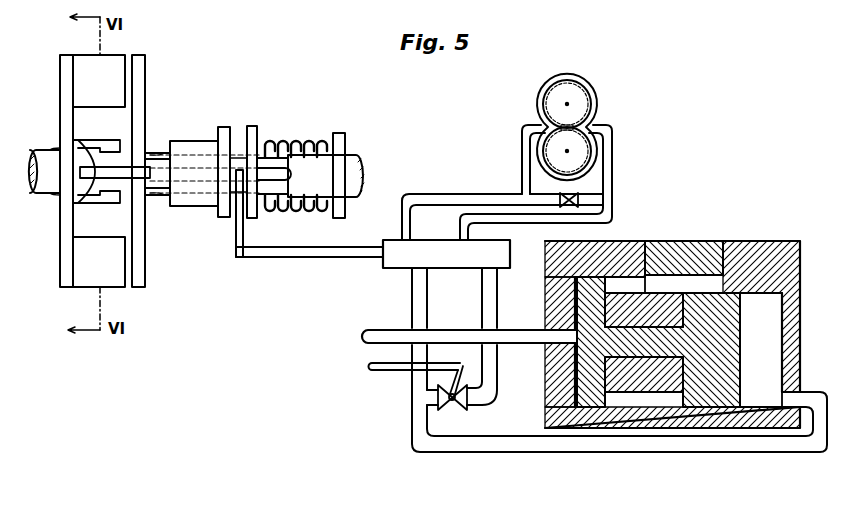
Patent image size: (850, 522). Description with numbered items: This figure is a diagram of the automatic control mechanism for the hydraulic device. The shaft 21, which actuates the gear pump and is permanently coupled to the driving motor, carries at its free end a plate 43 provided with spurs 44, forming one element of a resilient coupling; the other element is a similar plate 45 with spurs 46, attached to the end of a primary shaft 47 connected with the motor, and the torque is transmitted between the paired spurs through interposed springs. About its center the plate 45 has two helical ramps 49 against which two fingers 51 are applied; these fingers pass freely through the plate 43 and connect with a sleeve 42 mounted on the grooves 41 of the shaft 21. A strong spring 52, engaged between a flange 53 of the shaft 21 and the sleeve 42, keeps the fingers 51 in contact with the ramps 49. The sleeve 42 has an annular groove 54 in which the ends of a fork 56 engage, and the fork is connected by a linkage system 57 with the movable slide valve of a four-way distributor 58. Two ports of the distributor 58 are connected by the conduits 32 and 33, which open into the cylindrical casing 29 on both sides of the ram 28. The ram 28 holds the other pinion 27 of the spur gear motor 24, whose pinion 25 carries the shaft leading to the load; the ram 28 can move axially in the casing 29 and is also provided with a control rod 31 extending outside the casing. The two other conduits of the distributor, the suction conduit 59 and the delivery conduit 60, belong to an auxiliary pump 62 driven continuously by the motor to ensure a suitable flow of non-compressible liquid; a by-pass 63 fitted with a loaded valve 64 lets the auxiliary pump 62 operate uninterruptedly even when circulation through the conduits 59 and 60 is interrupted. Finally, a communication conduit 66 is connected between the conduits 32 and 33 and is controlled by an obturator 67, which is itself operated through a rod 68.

The shaft 21 is at (361, 183).
The spur gear motor 24 is at (672, 282).
The pinion 25 is at (711, 248).
The other pinion 27 is at (636, 305).
The ram 28 is at (730, 358).
The cylindrical casing 29 is at (775, 310).
The rod 31 is at (388, 333).
The conduit 32 is at (508, 452).
The conduit 33 is at (522, 330).
The grooves 41 is at (268, 170).
The sleeve 42 is at (190, 148).
The plate 43 is at (141, 81).
The spurs 44 is at (134, 151).
The plate 45 is at (63, 121).
The spurs 46 is at (88, 68).
The primary shaft 47 is at (46, 160).
The helical ramps 49 is at (117, 150).
The fingers 51 is at (152, 177).
The spring 52 is at (304, 141).
The flange 53 is at (345, 134).
The annular groove 54 is at (238, 130).
The fork 56 is at (236, 241).
The linkage system 57 is at (268, 258).
The four-way distributor 58 is at (400, 245).
The suction conduit 59 is at (473, 195).
The delivery conduit 60 is at (522, 223).
The auxiliary pump 62 is at (580, 122).
The by-pass 63 is at (590, 203).
The loaded valve 64 is at (575, 199).
The communication conduit 66 is at (494, 389).
The obturator 67 is at (453, 407).
The rod 68 is at (386, 373).